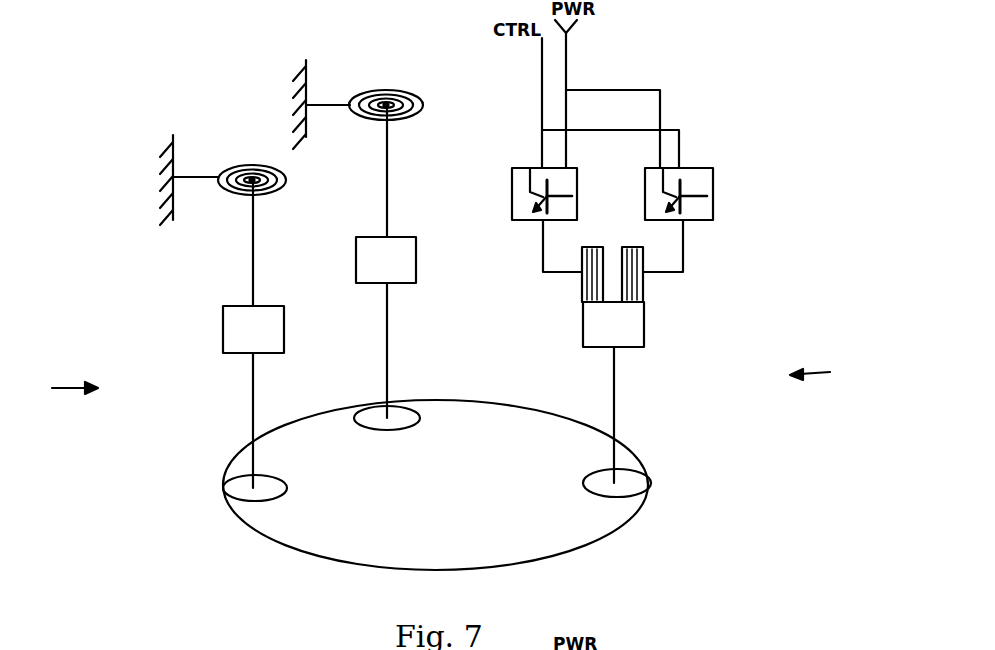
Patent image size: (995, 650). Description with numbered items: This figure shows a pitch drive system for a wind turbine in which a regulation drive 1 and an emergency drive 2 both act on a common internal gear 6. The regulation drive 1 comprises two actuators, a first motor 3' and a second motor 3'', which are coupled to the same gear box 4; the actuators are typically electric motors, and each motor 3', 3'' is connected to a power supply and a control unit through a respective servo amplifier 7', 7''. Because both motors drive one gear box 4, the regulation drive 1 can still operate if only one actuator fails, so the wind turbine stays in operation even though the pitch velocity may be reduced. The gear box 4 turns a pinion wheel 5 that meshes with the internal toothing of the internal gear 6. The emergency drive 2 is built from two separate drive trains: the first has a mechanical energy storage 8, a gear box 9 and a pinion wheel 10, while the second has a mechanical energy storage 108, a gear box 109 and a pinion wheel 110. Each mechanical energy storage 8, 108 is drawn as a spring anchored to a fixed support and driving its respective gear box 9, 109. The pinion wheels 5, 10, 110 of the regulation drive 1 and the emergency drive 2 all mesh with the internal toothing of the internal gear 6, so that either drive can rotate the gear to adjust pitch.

The regulation drive 1 is at (819, 374).
The emergency drive 2 is at (66, 387).
The first actuator 3' is at (673, 274).
The second actuator 3'' is at (550, 274).
The gear box 4 is at (645, 333).
The pinion wheel 5 is at (648, 473).
The internal gear 6 is at (600, 540).
The servo amplifier 7' is at (716, 219).
The servo amplifier 7'' is at (508, 220).
The mechanical energy storage 8 is at (237, 190).
The gear box 9 is at (223, 330).
The pinion wheel 10 is at (228, 482).
The mechanical energy storage 108 is at (381, 93).
The gear box 109 is at (363, 284).
The pinion wheel 110 is at (387, 430).